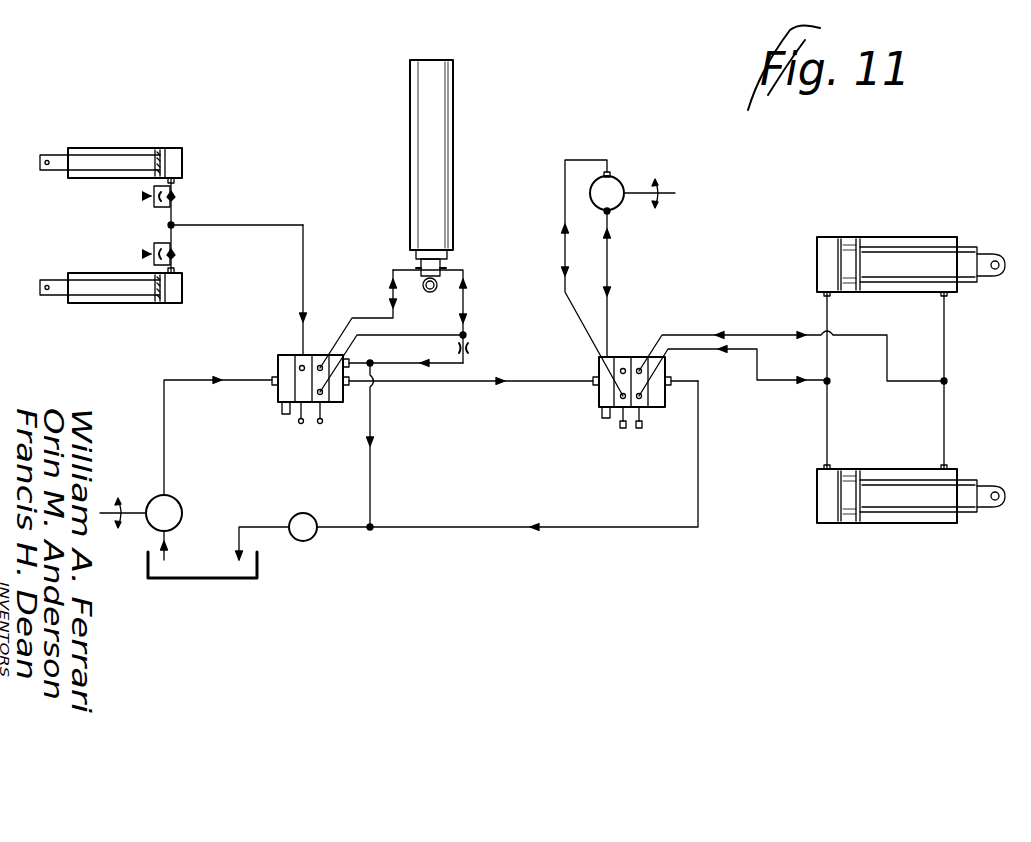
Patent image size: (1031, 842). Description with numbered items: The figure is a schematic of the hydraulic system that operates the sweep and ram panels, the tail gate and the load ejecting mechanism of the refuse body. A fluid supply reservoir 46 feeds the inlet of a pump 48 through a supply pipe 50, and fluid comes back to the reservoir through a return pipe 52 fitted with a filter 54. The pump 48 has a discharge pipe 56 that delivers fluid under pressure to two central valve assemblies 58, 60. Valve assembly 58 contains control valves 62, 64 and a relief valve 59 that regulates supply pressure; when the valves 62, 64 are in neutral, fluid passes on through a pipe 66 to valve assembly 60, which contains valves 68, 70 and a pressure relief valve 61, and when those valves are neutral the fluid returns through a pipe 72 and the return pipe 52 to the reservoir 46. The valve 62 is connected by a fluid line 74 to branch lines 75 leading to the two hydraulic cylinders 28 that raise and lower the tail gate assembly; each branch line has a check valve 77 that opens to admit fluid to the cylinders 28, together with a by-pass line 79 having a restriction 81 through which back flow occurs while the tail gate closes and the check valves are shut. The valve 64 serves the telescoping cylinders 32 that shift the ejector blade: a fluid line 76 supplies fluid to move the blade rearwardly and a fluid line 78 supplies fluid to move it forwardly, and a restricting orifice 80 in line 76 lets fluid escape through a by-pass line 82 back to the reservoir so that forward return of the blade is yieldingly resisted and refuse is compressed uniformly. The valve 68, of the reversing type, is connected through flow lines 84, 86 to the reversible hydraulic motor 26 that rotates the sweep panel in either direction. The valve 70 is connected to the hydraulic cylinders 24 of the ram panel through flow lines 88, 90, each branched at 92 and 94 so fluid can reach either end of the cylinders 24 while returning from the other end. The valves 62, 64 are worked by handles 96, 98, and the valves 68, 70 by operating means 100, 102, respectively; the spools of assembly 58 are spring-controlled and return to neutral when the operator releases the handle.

The hydraulic cylinders 24 is at (884, 237).
The reversible hydraulic motor 26 is at (622, 180).
The hydraulic cylinders 28 is at (98, 148).
The telescoping cylinders 32 is at (455, 95).
The fluid supply reservoir 46 is at (207, 582).
The pump 48 is at (182, 495).
The supply pipe 50 is at (166, 558).
The return pipe 52 is at (262, 527).
The filter 54 is at (314, 516).
The discharge pipe 56 is at (164, 415).
The valve assembly 58 is at (268, 357).
The relief valve 59 is at (282, 410).
The valve assembly 60 is at (594, 404).
The pressure relief valve 61 is at (604, 418).
The control valve 62 is at (300, 355).
The control valve 64 is at (320, 355).
The pipe 66 is at (528, 382).
The valve 68 is at (622, 357).
The valve 70 is at (639, 357).
The pipe 72 is at (485, 530).
The fluid line 74 is at (298, 225).
The branch lines 75 is at (184, 225).
The fluid line 76 is at (463, 292).
The check valve 77 is at (178, 191).
The fluid line 78 is at (370, 318).
The by-pass line 79 is at (152, 245).
The restricting orifice 80 is at (470, 348).
The restriction 81 is at (149, 196).
The by-pass line 82 is at (372, 458).
The flow line 84 is at (565, 202).
The flow line 86 is at (607, 253).
The flow line 88 is at (758, 335).
The flow line 90 is at (775, 390).
The branch 92 is at (944, 342).
The branch 94 is at (827, 315).
The handle 96 is at (299, 424).
The handle 98 is at (322, 424).
The operating means 100 is at (622, 430).
The operating means 102 is at (640, 430).